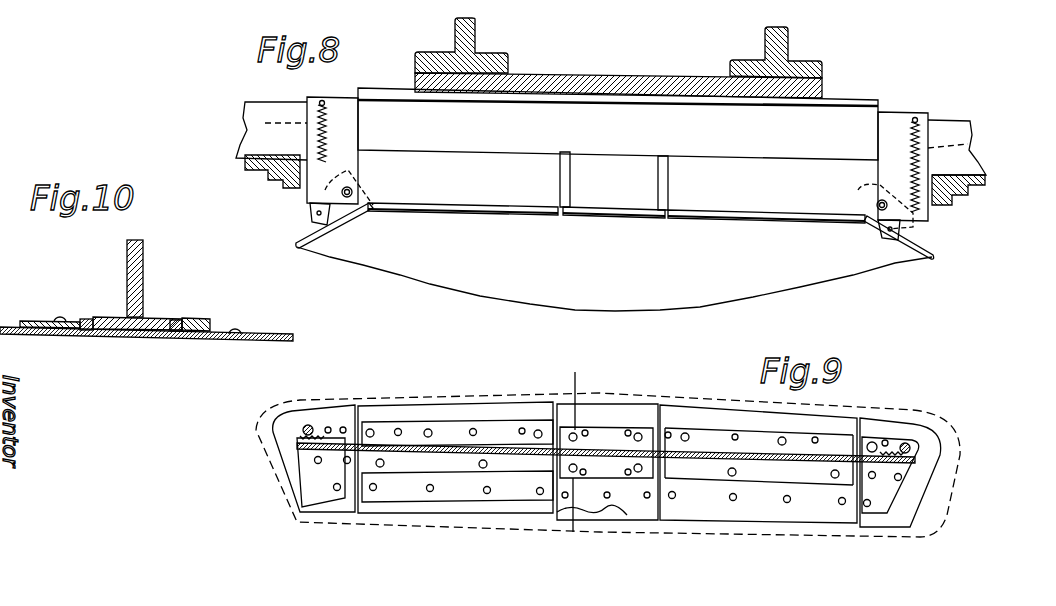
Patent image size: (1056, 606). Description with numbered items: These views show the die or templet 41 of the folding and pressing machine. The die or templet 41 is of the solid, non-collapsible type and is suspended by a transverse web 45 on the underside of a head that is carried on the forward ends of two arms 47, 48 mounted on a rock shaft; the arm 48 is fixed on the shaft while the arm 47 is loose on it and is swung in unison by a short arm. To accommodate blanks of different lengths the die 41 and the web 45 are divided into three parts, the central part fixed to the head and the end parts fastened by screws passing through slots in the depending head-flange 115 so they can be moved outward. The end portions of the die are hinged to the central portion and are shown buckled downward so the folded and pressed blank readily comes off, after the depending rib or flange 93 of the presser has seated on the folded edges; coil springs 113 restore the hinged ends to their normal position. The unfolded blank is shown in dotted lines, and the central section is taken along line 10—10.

In FIG. 9, the section line 10 is at (590, 445).
In FIG. 8, the die or templet 41 is at (387, 215).
In FIG. 10, the die or templet 41 is at (266, 334).
In FIG. 9, the die or templet 41 is at (295, 476).
In FIG. 8, the transverse web 45 is at (507, 200).
In FIG. 10, the transverse web 45 is at (125, 270).
In FIG. 9, the transverse web 45 is at (485, 445).
In FIG. 8, the arm 47 is at (478, 22).
In FIG. 8, the arm 48 is at (767, 31).
In FIG. 8, the depending rib or flange 93 is at (957, 197).
In FIG. 8, the coil springs 113 is at (264, 123).
In FIG. 9, the coil springs 113 is at (308, 425).
In FIG. 8, the depending head-flange 115 is at (617, 147).